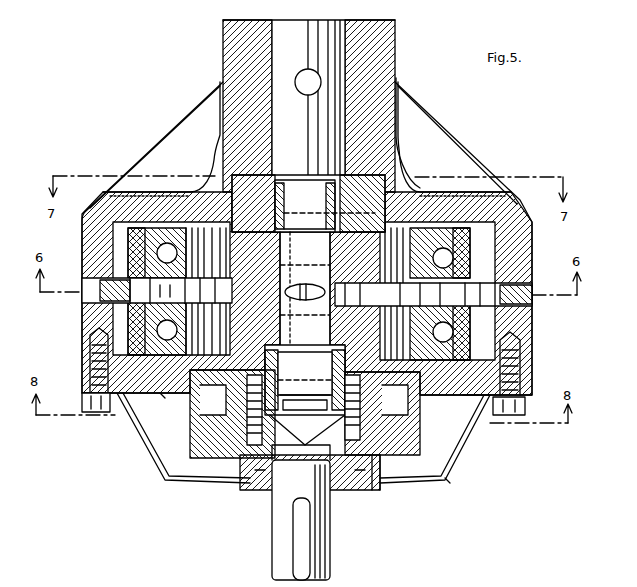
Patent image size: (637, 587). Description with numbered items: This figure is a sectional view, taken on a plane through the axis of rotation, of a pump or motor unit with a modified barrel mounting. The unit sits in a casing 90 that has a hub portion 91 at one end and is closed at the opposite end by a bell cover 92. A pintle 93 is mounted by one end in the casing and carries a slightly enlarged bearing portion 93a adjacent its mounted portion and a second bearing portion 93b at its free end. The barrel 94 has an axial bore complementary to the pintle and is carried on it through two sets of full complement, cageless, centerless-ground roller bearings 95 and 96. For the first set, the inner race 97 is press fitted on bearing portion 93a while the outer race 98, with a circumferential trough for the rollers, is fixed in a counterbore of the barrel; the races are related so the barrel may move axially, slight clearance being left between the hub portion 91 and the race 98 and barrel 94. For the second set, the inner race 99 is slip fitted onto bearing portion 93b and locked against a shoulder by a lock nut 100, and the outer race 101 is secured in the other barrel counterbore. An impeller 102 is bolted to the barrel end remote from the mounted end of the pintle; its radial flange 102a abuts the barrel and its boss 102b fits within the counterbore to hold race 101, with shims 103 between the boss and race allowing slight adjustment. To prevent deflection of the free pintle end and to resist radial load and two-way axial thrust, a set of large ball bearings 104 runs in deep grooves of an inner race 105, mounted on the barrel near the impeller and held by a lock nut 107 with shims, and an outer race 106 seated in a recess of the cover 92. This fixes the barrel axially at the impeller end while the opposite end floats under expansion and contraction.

The casing 90 is at (530, 333).
The hub portion 91 is at (389, 60).
The bell cover 92 is at (383, 470).
The pintle 93 is at (318, 282).
The bearing portion 93a is at (305, 221).
The bearing portion 93b is at (305, 373).
The barrel 94 is at (185, 425).
The anti-friction roller bearings 95 is at (328, 198).
The anti-friction roller bearings 96 is at (300, 350).
The inner race 97 is at (332, 180).
The outer race 98 is at (396, 180).
The inner race 99 is at (335, 345).
The lock nut 100 is at (335, 440).
The outer race 101 is at (345, 352).
The impeller 102 is at (322, 515).
The radial flange 102a is at (345, 484).
The boss 102b is at (262, 447).
The shims 103 is at (230, 445).
The anti-friction ball bearings 104 is at (205, 418).
The inner race 105 is at (400, 440).
The outer race 106 is at (440, 410).
The lock nut 107 is at (380, 458).